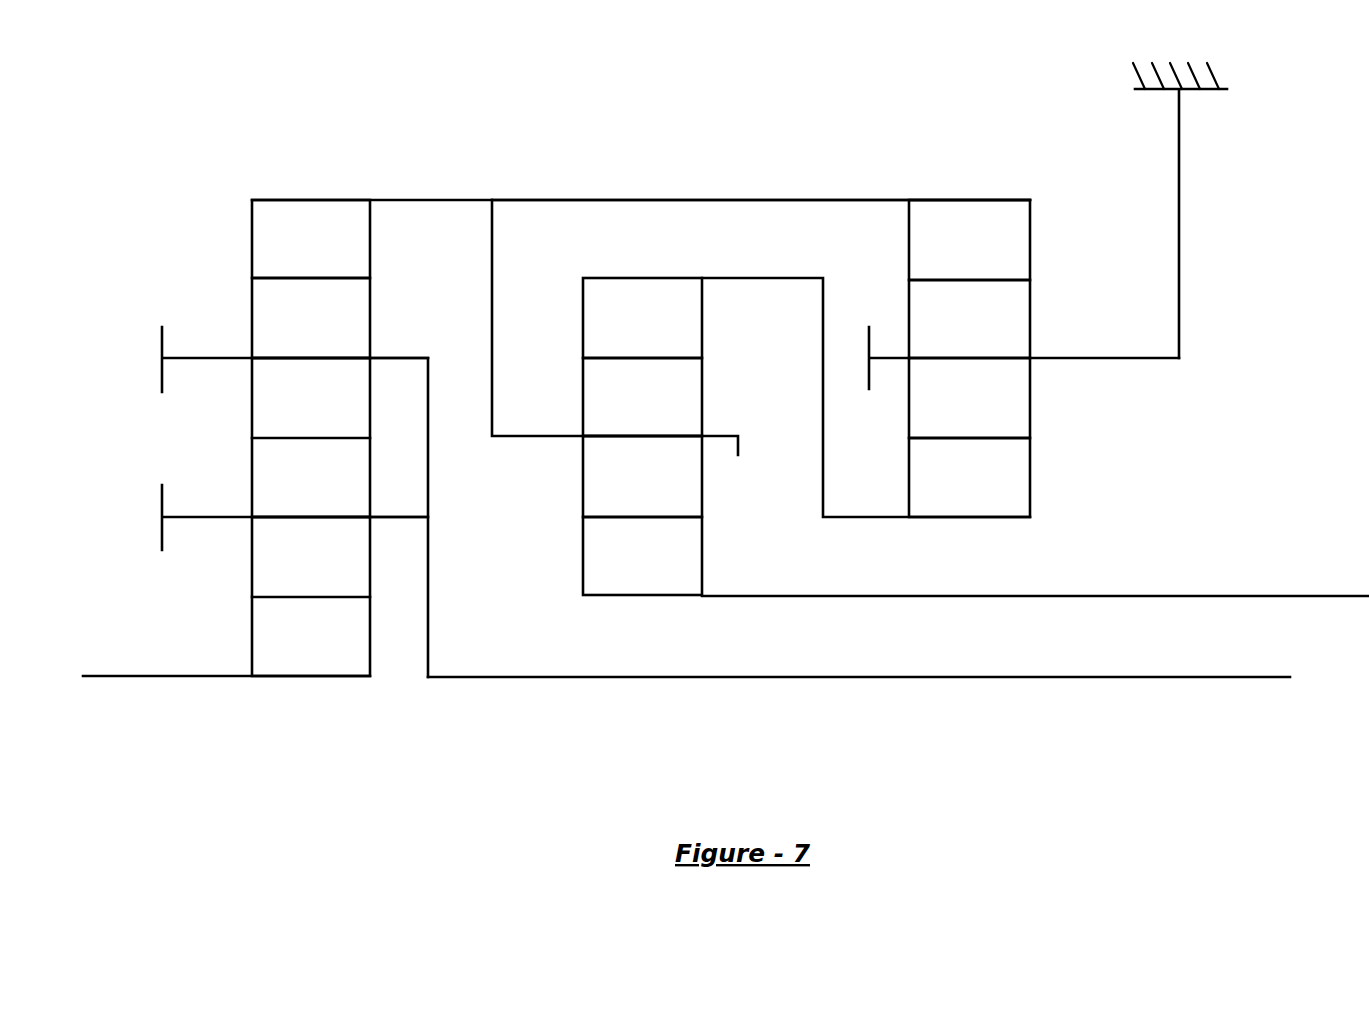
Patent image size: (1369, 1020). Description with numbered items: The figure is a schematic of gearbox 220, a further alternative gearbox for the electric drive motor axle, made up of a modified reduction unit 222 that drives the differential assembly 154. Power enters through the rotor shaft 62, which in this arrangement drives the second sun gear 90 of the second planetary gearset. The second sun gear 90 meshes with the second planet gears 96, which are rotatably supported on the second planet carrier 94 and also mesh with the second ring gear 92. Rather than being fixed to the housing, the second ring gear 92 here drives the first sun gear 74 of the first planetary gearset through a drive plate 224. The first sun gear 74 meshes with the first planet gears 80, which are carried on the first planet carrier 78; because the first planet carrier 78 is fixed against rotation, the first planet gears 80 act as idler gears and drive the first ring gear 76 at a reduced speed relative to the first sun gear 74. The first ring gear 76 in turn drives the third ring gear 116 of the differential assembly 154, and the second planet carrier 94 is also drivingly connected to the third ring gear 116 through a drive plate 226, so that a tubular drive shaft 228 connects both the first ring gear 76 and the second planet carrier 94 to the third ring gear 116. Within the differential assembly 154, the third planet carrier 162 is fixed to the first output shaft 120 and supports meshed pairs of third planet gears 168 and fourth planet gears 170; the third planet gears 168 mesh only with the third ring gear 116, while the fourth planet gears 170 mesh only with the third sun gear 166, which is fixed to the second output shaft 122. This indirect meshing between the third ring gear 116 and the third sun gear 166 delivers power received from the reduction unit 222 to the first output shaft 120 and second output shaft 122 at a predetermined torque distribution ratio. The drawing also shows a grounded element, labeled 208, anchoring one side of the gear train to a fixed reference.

The rotor shaft 62 is at (1108, 596).
The first sun gear 74 is at (1012, 475).
The first ring gear 76 is at (1012, 248).
The first planet carrier 78 is at (1136, 378).
The first planet gears 80 is at (1017, 332).
The second sun gear 90 is at (690, 567).
The second ring gear 92 is at (608, 288).
The second planet carrier 94 is at (560, 455).
The second planet gears 96 is at (687, 388).
The third ring gear 116 is at (319, 218).
The first output shaft 120 is at (772, 679).
The second output shaft 122 is at (103, 679).
The differential assembly 154 is at (184, 243).
The third planet carrier 162 is at (445, 474).
The third sun gear 166 is at (262, 640).
The third planet gears 168 is at (358, 313).
The fourth planet gears 170 is at (263, 480).
The grounded member 208 is at (1180, 222).
The gearbox 220 is at (1355, 95).
The reduction unit 222 is at (796, 186).
The drive plate 224 is at (818, 438).
The drive plate 226 is at (494, 325).
The tubular drive shaft 228 is at (466, 197).